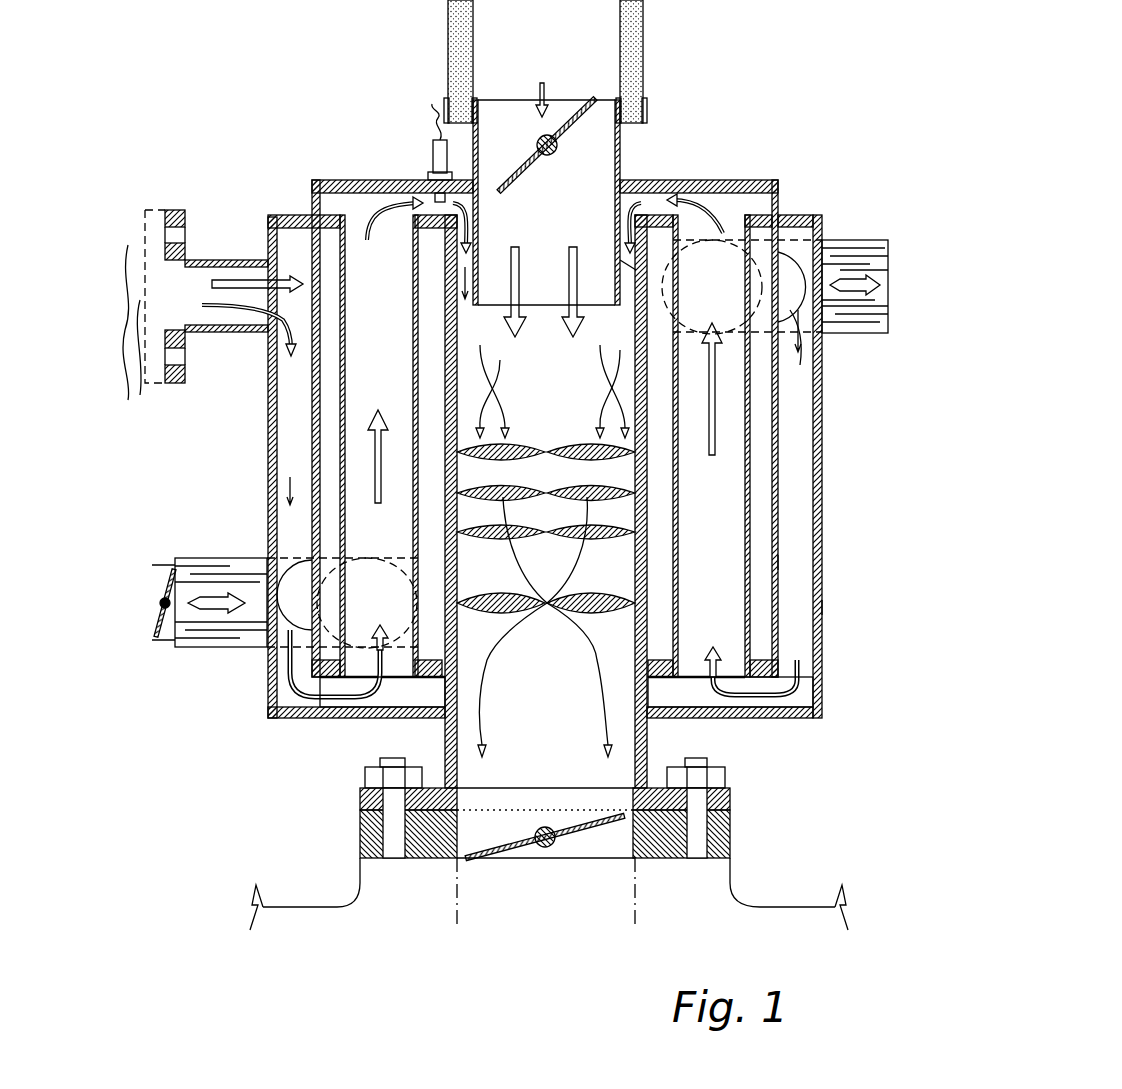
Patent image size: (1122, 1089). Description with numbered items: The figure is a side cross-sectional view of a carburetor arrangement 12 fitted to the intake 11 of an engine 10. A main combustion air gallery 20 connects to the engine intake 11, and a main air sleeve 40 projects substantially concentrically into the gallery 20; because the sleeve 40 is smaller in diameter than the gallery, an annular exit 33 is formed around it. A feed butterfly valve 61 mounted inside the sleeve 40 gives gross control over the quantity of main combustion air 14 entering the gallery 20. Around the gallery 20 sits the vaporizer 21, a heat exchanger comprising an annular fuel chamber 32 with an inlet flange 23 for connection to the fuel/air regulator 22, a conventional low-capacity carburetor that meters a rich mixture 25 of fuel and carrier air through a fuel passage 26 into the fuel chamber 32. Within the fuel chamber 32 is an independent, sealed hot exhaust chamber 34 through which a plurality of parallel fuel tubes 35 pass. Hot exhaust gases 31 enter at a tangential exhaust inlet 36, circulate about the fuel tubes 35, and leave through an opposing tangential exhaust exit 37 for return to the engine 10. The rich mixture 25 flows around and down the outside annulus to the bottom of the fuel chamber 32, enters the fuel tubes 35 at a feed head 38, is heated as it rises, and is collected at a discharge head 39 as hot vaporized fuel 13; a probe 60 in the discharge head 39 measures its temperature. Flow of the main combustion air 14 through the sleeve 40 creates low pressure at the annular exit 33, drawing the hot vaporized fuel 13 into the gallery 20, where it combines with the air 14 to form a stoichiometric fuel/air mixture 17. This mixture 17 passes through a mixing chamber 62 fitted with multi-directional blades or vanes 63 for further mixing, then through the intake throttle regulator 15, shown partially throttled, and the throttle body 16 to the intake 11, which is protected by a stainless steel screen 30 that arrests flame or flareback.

The engine 10 is at (295, 907).
The intake 11 is at (522, 808).
The carburetor arrangement 12 is at (283, 125).
The hot vaporized fuel 13 is at (662, 267).
The main combustion air 14 is at (555, 247).
The intake throttle regulator 15 is at (545, 865).
The throttle body 16 is at (487, 857).
The stoichiometric fuel/air mixture 17 is at (603, 670).
The main combustion air gallery 20 is at (622, 393).
The vaporizer 21 is at (268, 493).
The fuel/air regulator 22 is at (120, 400).
The inlet flange 23 is at (188, 247).
The rich mixture 25 is at (373, 207).
The fuel passage 26 is at (237, 247).
The stainless steel screen 30 is at (575, 808).
The hot exhaust gases 31 is at (847, 277).
The annular fuel chamber 32 is at (822, 607).
The annular exit 33 is at (627, 267).
The hot exhaust chamber 34 is at (780, 563).
The fuel tubes 35 is at (343, 400).
The tangential exhaust inlet 36 is at (243, 647).
The tangential exhaust exit 37 is at (837, 238).
The feed head 38 is at (285, 698).
The discharge head 39 is at (317, 180).
The main air sleeve 40 is at (580, 133).
The probe 60 is at (410, 150).
The feed butterfly valve 61 is at (517, 167).
The mixing chamber 62 is at (546, 600).
The multi-directional blades or vanes 63 is at (602, 597).